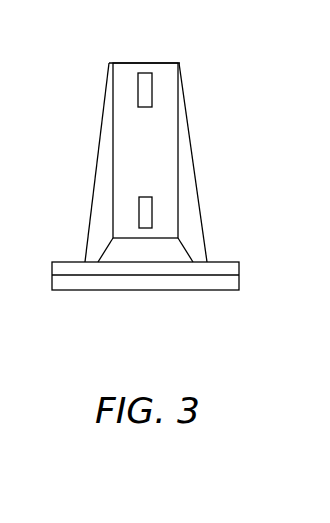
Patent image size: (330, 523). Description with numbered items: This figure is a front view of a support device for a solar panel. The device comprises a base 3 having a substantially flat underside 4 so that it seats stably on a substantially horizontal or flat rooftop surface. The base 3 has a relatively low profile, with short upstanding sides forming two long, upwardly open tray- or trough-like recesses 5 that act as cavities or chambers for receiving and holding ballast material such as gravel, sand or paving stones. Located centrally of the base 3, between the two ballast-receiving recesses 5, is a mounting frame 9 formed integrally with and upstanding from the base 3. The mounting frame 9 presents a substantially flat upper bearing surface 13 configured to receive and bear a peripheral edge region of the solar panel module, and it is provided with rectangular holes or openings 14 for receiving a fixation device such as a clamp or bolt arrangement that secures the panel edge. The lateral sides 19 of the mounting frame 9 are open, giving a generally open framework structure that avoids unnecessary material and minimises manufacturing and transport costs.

The base 3 is at (175, 285).
The substantially flat underside 4 is at (149, 291).
The tray- or trough-like recesses 5 is at (67, 257).
The mounting frame 9 is at (164, 182).
The upper bearing surface 13 is at (183, 133).
The rectangular holes or openings 14 is at (145, 73).
The lateral sides 19 is at (100, 195).